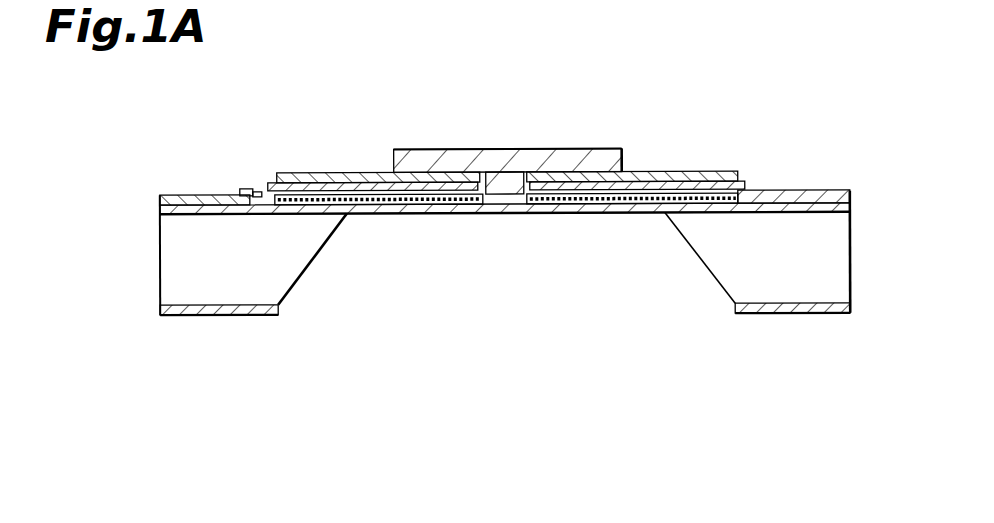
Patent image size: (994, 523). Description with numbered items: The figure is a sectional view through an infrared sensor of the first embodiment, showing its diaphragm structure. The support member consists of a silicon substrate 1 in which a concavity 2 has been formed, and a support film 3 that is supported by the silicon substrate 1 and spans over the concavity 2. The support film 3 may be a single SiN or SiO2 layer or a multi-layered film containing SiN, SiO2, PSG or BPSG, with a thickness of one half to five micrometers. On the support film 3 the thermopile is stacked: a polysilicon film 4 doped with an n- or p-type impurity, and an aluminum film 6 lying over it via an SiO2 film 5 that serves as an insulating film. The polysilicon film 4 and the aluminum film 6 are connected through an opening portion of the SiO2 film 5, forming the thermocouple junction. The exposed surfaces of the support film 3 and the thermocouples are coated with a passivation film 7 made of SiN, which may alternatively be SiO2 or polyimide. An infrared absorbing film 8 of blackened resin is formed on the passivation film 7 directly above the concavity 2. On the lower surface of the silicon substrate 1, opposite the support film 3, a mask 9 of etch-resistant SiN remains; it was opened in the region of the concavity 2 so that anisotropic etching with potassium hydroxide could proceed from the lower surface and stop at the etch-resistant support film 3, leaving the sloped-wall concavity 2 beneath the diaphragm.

The silicon substrate 1 is at (827, 267).
The concavity 2 is at (508, 268).
The support film 3 is at (843, 205).
The polysilicon film 4 is at (739, 197).
The SiO2 film 5 is at (693, 172).
The aluminum film 6 is at (350, 172).
The passivation film 7 is at (213, 197).
The infrared absorbing film 8 is at (503, 150).
The mask 9 is at (833, 313).